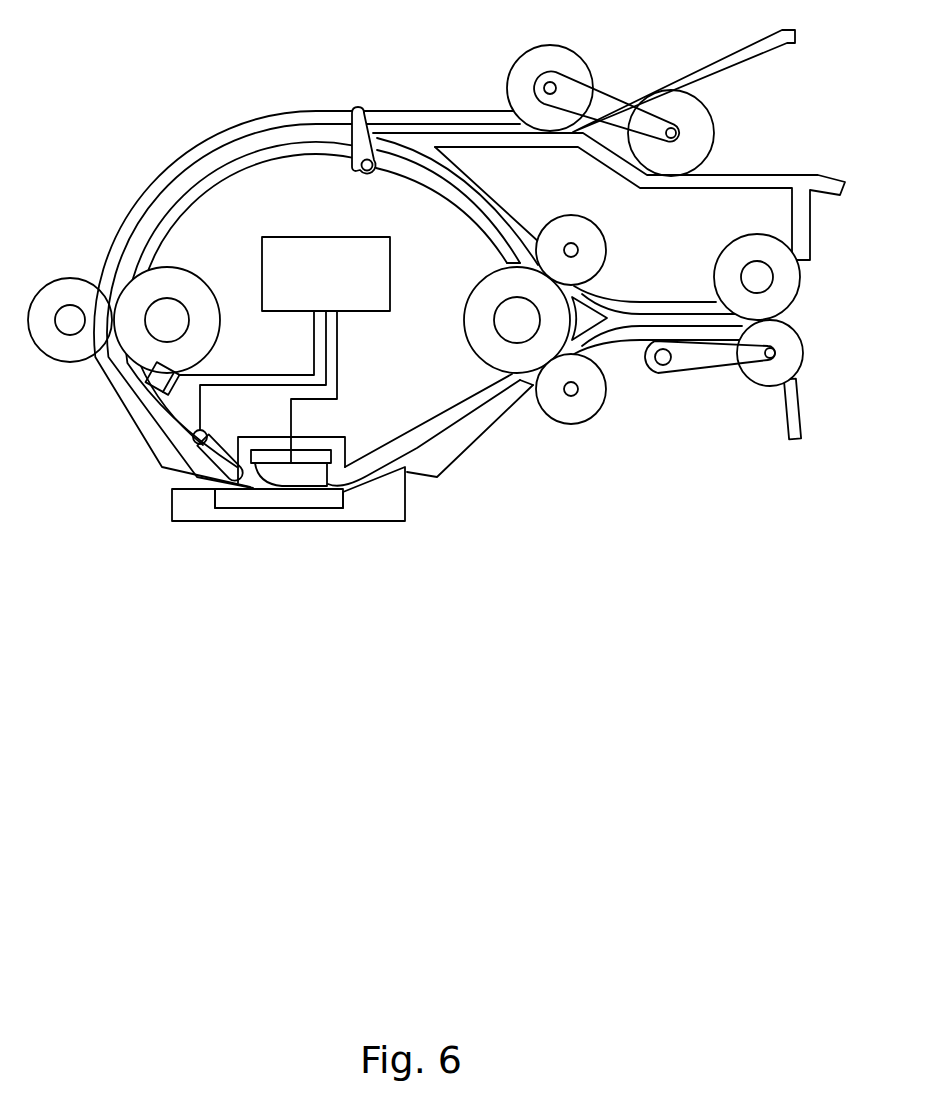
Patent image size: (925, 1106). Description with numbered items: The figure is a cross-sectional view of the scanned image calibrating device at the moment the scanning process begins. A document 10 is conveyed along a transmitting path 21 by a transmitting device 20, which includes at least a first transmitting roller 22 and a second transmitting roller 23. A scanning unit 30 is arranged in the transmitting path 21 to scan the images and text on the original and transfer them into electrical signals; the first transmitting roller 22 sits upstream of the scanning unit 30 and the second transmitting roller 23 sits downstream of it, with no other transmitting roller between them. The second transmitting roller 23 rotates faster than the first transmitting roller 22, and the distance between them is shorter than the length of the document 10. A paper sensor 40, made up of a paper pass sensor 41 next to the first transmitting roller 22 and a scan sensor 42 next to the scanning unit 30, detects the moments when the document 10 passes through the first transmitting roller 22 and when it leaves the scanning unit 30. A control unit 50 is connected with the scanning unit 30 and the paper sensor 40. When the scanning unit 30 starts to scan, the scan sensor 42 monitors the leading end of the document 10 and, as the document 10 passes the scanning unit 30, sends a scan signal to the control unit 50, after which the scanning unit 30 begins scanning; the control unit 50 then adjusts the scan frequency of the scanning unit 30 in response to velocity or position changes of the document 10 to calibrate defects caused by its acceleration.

The document 10 is at (419, 456).
The transmitting device 20 is at (620, 268).
The transmitting path 21 is at (193, 167).
The first transmitting roller 22 is at (90, 330).
The second transmitting roller 23 is at (582, 402).
The scanning unit 30 is at (293, 478).
The paper sensor 40 is at (164, 403).
The paper pass sensor 41 is at (180, 374).
The scan sensor 42 is at (225, 447).
The control unit 50 is at (314, 280).